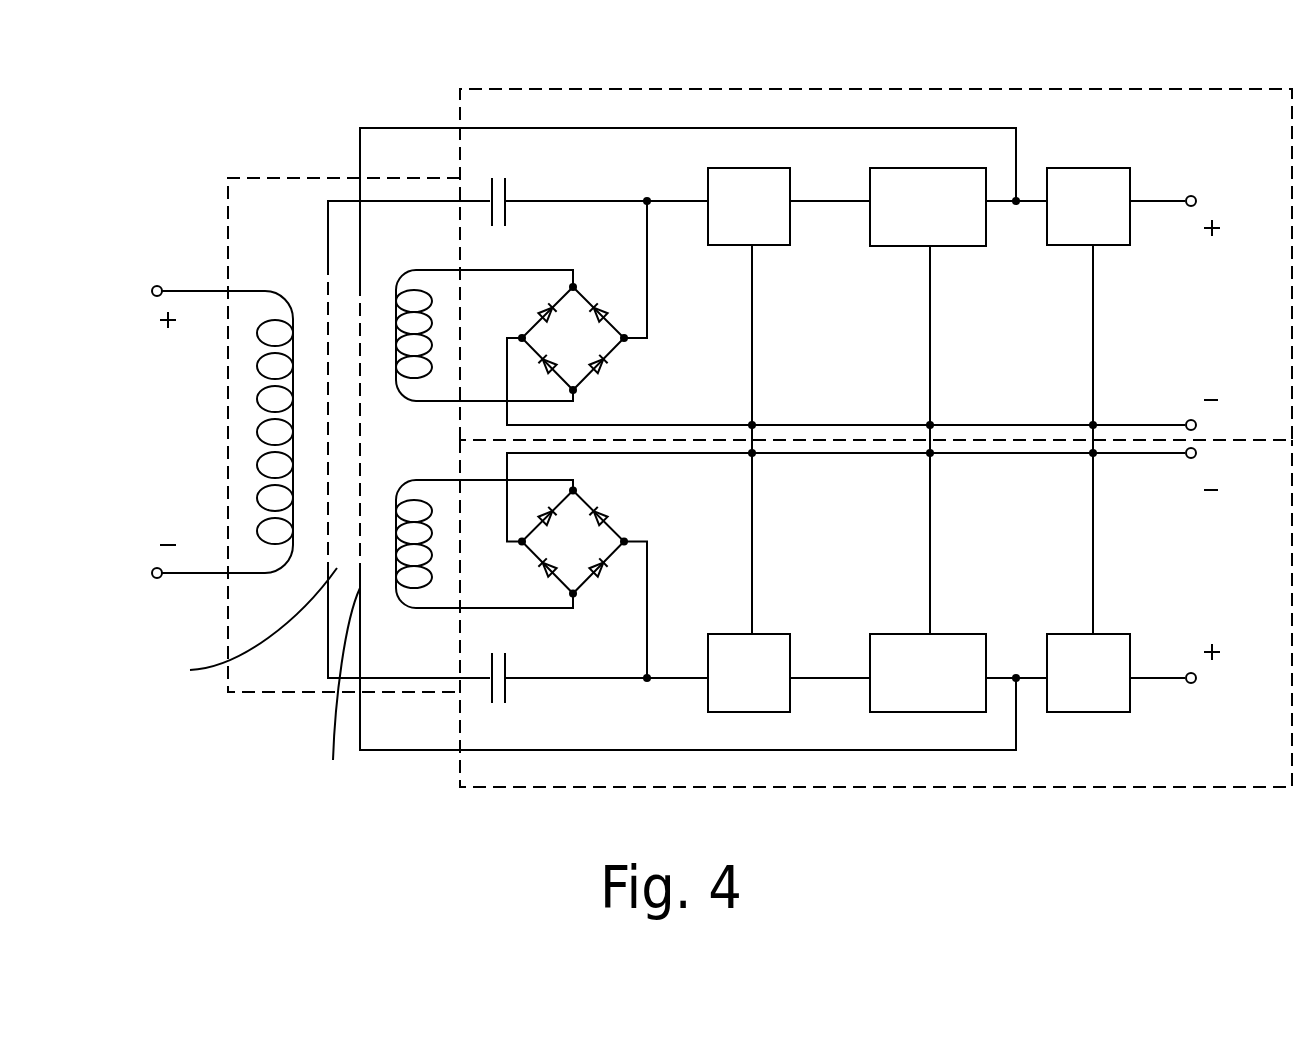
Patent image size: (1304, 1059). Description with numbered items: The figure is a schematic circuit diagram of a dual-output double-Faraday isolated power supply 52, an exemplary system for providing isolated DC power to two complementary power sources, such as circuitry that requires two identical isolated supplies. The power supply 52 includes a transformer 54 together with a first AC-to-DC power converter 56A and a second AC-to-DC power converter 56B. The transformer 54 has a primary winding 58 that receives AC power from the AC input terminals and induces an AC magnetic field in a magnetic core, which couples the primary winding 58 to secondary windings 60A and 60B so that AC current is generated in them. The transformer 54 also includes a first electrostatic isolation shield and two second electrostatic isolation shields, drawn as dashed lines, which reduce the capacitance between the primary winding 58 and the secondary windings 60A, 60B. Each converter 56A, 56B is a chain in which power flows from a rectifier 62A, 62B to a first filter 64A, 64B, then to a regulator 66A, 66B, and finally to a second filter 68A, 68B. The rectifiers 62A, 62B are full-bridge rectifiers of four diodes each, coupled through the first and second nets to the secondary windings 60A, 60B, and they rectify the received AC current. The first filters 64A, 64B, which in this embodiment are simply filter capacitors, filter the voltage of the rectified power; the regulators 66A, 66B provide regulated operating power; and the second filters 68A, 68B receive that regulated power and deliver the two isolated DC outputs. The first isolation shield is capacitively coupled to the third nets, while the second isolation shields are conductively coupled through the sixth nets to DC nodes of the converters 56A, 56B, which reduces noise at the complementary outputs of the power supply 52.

The dual-output double-Faraday isolated power supply 52 is at (719, 430).
The transformer 54 is at (237, 178).
The first AC-to-DC power converter 56A is at (533, 89).
The second AC-to-DC power converter 56B is at (527, 788).
The primary winding 58 is at (282, 573).
The first secondary winding 60A is at (396, 292).
The second secondary winding 60B is at (393, 610).
The first rectifier 62A is at (587, 278).
The second rectifier 62B is at (628, 522).
The first filter 64A is at (768, 168).
The first filter 64B is at (768, 634).
The regulator 66A is at (950, 168).
The regulator 66B is at (955, 634).
The second filter 68A is at (1065, 168).
The second filter 68B is at (1110, 634).